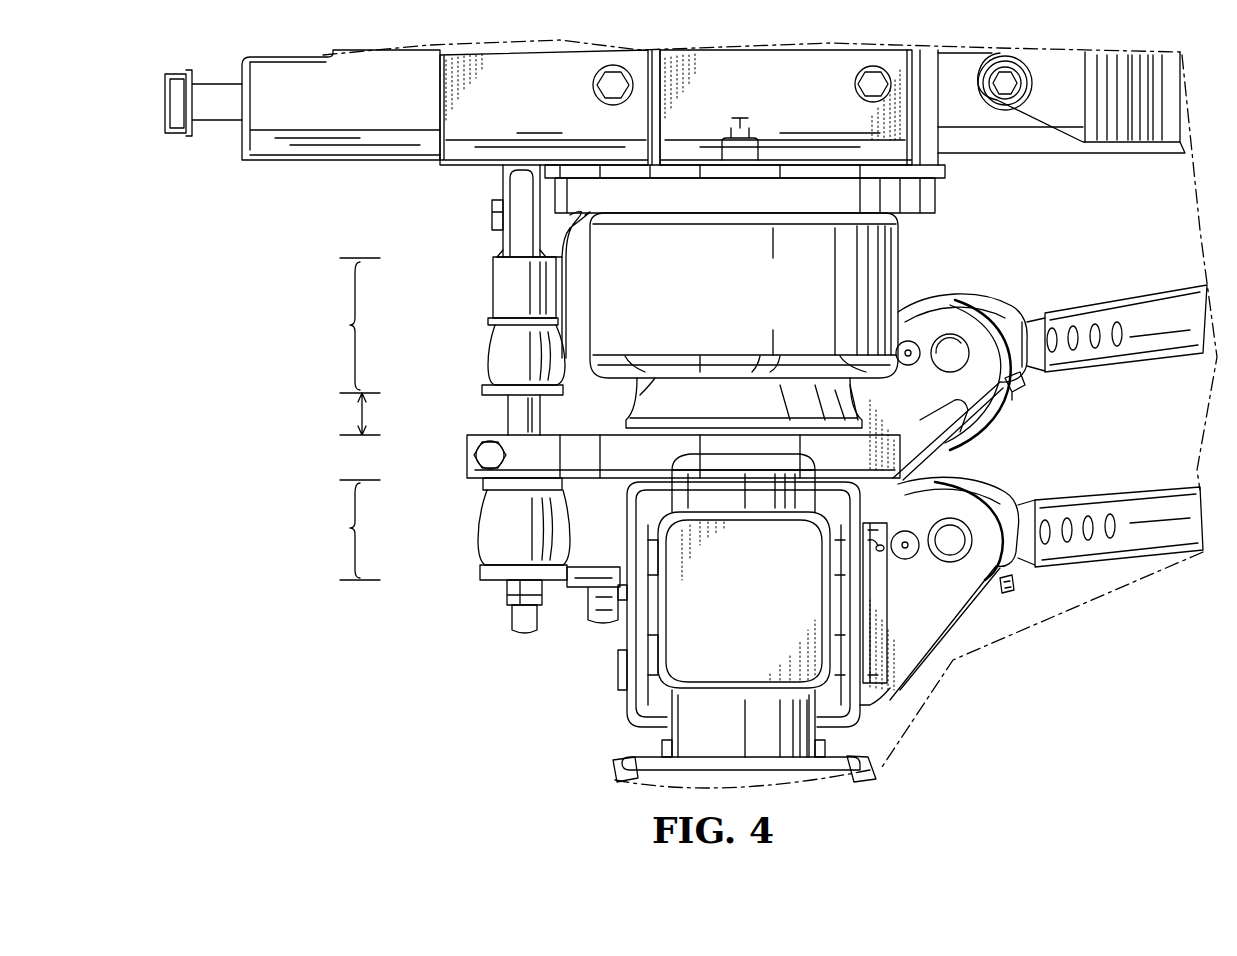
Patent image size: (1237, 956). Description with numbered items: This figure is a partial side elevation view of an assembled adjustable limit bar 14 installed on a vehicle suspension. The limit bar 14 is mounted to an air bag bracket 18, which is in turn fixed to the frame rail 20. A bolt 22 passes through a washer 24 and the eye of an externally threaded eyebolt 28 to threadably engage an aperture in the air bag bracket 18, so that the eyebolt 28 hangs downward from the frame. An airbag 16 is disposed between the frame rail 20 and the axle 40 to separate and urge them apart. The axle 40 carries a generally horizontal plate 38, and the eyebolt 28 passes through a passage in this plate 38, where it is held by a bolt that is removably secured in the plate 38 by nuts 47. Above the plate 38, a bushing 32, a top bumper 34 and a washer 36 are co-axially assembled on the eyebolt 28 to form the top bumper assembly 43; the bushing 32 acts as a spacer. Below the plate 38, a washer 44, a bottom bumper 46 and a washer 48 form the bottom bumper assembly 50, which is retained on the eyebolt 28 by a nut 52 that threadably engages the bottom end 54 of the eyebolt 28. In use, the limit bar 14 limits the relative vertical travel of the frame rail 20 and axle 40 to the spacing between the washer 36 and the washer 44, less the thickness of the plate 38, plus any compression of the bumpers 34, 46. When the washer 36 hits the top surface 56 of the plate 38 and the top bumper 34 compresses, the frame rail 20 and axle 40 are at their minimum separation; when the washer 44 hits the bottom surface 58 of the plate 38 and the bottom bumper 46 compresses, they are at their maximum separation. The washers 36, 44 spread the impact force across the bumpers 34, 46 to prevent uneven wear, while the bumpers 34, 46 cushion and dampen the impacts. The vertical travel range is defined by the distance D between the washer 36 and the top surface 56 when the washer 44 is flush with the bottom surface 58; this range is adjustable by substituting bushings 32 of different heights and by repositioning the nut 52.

The adjustable limit bar 14 is at (470, 548).
The airbag 16 is at (696, 285).
The air bag bracket 18 is at (674, 208).
The frame rail 20 is at (330, 118).
The bolt 22 is at (492, 222).
The washer 24 is at (503, 250).
The eyebolt 28 is at (512, 188).
The bushing 32 is at (505, 280).
The top bumper 34 is at (500, 340).
The washer 36 is at (487, 379).
The plate 38 is at (588, 467).
The axle 40 is at (608, 711).
The top bumper assembly 43 is at (348, 325).
The washer 44 is at (478, 483).
The bottom bumper 46 is at (492, 503).
The nuts 47 is at (485, 455).
The washer 48 is at (482, 580).
The bottom bumper assembly 50 is at (348, 530).
The nut 52 is at (510, 592).
The bottom end 54 is at (515, 612).
The top surface 56 is at (572, 435).
The bottom surface 58 is at (580, 478).
The distance D is at (351, 414).